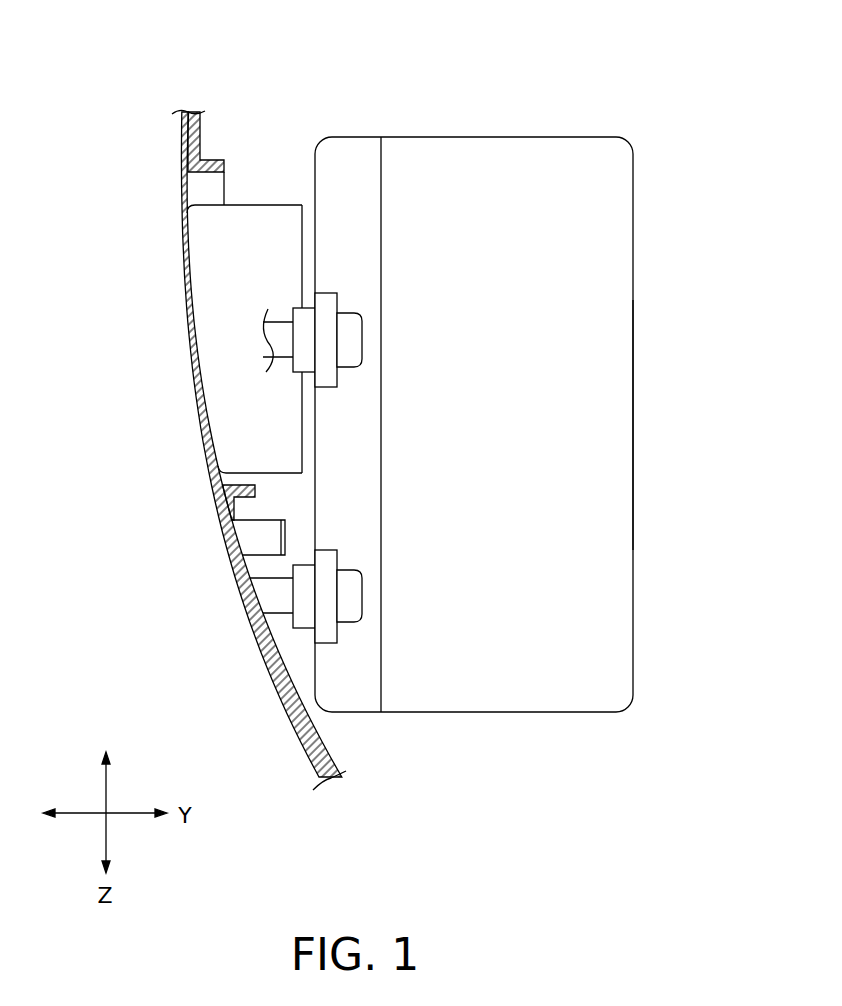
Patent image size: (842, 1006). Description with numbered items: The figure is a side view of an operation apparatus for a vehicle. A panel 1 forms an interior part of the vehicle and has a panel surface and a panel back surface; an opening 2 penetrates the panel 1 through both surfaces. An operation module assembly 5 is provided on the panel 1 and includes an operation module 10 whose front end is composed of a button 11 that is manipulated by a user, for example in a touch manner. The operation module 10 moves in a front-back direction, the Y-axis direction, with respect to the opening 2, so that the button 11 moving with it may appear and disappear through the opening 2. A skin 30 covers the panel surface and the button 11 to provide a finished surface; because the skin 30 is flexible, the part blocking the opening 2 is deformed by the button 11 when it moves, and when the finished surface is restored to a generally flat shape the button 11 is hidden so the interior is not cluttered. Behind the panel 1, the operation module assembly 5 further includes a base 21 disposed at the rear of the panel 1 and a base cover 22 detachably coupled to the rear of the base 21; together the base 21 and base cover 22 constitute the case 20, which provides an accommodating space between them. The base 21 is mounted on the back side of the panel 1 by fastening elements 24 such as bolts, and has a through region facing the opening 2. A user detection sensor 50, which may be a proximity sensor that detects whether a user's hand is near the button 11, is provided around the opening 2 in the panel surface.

The panel 1 is at (200, 137).
The opening 2 is at (210, 188).
The operation module assembly 5 is at (495, 363).
The operation module 10 is at (213, 275).
The button 11 is at (210, 365).
The case 20 is at (474, 363).
The base 21 is at (363, 150).
The base cover 22 is at (530, 308).
The fastening elements 24 is at (352, 337).
The skin 30 is at (258, 655).
The user detection sensor 50 is at (243, 540).